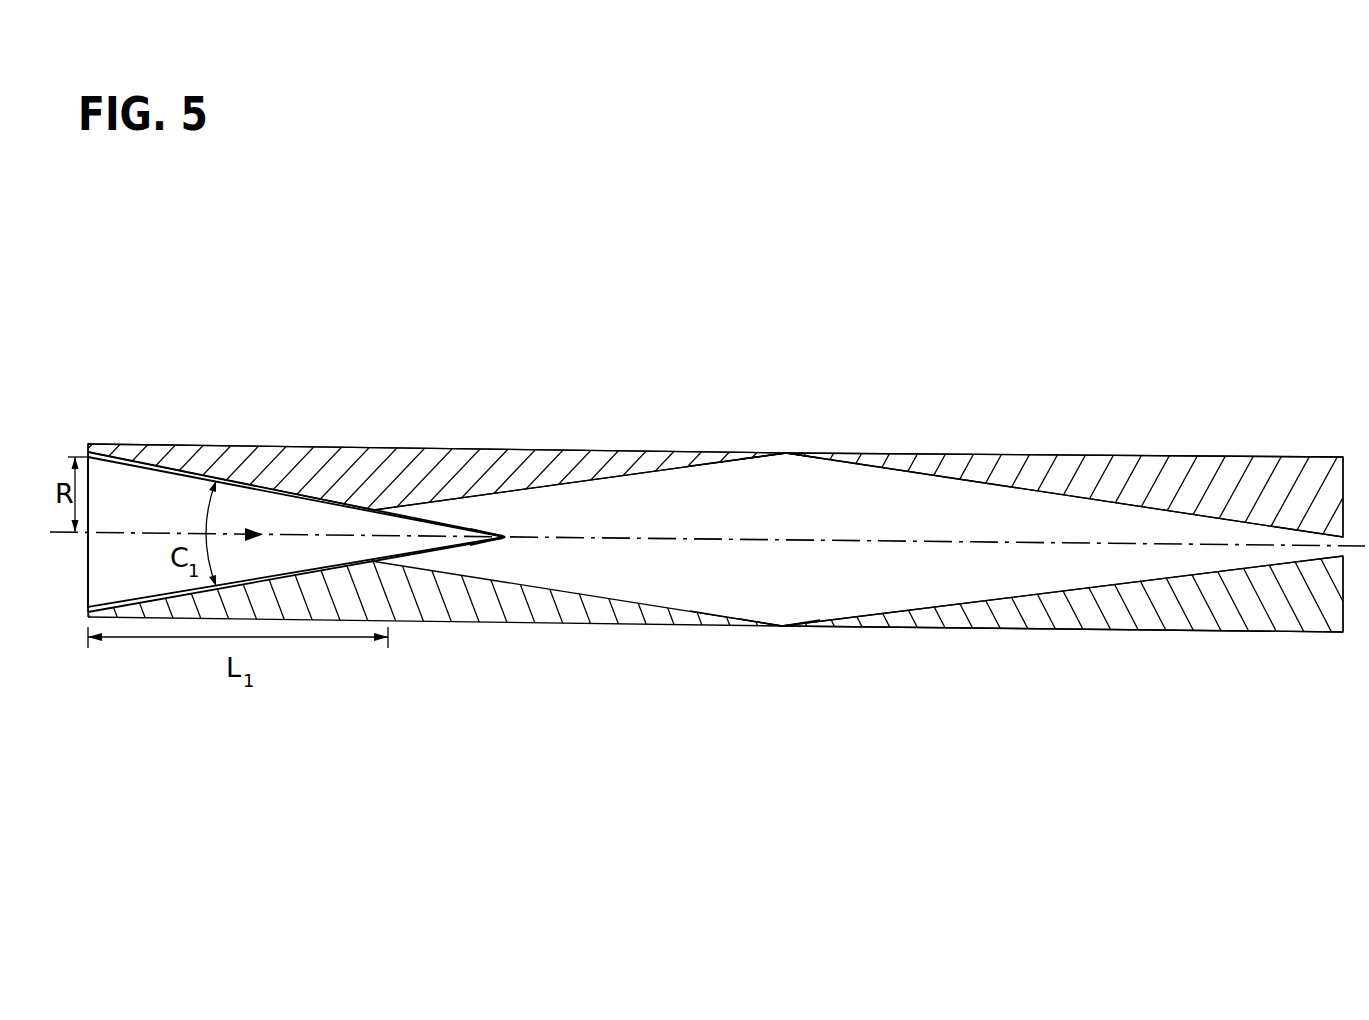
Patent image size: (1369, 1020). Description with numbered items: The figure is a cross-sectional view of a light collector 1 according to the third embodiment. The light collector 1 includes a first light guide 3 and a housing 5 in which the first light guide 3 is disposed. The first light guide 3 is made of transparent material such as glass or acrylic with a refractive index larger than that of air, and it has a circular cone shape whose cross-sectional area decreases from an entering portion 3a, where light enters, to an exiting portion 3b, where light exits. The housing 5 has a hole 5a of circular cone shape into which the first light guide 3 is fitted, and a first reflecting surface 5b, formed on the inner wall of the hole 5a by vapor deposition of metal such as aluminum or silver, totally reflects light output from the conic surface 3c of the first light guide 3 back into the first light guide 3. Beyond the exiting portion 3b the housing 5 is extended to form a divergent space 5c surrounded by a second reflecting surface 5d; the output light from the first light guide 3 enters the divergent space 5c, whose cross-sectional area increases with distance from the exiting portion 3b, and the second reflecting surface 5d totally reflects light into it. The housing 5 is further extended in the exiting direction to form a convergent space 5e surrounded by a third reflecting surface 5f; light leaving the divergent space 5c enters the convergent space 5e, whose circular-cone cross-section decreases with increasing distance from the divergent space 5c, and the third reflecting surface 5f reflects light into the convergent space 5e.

The light collector 1 is at (302, 332).
The first light guide 3 is at (161, 492).
The entering portion 3a is at (113, 499).
The exiting portion 3b is at (450, 527).
The conic surface 3c is at (316, 487).
The housing 5 is at (667, 333).
The hole 5a is at (258, 470).
The first reflecting surface 5b is at (363, 497).
The divergent space 5c is at (747, 483).
The second reflecting surface 5d is at (713, 457).
The convergent space 5e is at (898, 513).
The third reflecting surface 5f is at (1056, 487).